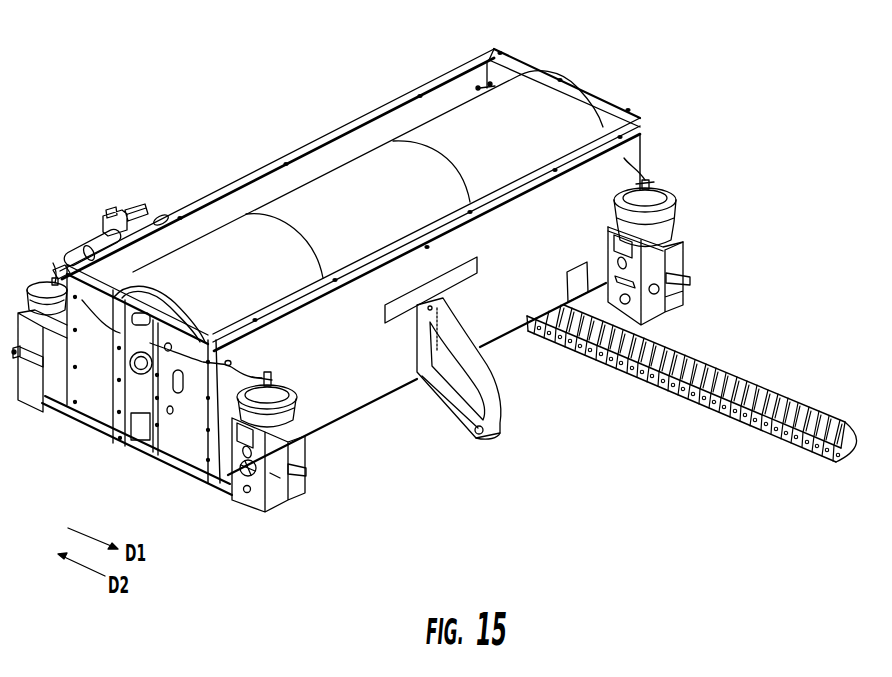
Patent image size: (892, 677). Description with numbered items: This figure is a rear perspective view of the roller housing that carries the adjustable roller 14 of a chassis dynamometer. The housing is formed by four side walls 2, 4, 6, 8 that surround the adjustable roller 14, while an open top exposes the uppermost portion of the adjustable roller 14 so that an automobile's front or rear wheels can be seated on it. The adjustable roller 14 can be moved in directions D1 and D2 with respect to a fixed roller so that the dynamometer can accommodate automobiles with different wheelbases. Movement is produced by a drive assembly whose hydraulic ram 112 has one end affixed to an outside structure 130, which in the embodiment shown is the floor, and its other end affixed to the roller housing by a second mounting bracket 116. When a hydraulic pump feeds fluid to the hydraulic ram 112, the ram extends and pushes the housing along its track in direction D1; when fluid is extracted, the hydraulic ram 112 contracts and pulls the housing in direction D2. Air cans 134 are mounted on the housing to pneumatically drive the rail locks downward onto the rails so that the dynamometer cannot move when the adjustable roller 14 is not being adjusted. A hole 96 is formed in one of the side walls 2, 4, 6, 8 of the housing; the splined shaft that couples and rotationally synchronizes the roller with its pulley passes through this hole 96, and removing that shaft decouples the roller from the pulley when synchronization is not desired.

The side wall 2 is at (626, 149).
The side wall 4 is at (90, 410).
The side wall 6 is at (323, 150).
The side wall 8 is at (617, 105).
The adjustable roller 14 is at (557, 103).
The hole 96 is at (140, 376).
The hydraulic ram 112 is at (455, 424).
The second mounting bracket 116 is at (487, 425).
The outside structure 130 is at (734, 507).
The air can 134 is at (676, 212).